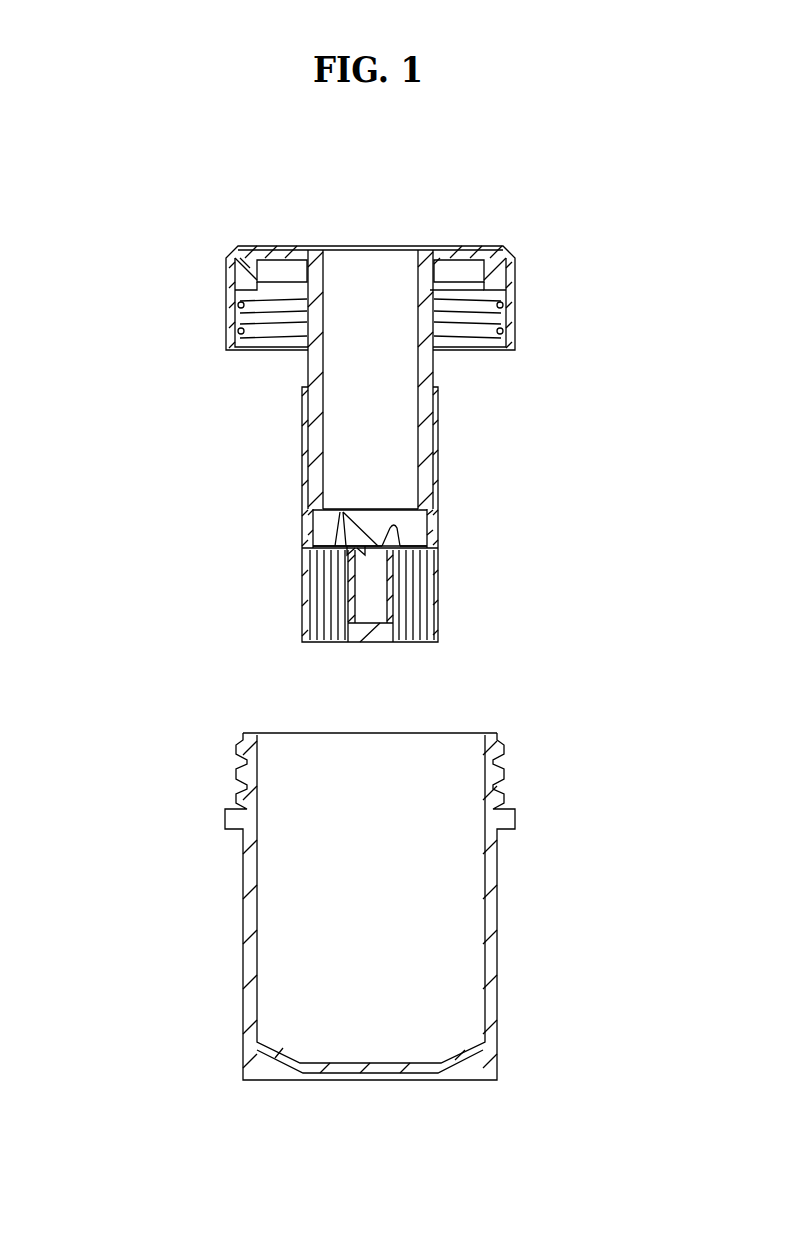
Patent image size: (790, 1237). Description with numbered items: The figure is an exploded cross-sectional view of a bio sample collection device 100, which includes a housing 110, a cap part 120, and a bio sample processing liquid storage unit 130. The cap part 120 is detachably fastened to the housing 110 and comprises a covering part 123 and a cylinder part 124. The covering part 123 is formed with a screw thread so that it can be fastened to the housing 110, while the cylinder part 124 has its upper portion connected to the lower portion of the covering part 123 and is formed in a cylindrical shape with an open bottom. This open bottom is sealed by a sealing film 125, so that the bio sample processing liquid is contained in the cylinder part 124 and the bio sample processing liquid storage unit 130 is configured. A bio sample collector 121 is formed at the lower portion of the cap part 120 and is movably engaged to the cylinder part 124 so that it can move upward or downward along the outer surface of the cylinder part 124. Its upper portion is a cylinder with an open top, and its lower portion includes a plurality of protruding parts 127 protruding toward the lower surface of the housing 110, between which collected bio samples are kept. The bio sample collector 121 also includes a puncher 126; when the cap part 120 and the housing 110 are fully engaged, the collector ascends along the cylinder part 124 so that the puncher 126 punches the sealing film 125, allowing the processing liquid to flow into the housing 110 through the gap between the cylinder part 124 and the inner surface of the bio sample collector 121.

The bio sample collection device 100 is at (112, 212).
The housing 110 is at (498, 908).
The cap part 120 is at (612, 266).
The bio sample collector 121 is at (440, 512).
The covering part 123 is at (515, 280).
The cylinder part 124 is at (430, 358).
The sealing film 125 is at (333, 508).
The puncher 126 is at (335, 535).
The protruding parts 127 is at (440, 603).
The bio sample processing liquid storage unit 130 is at (355, 428).